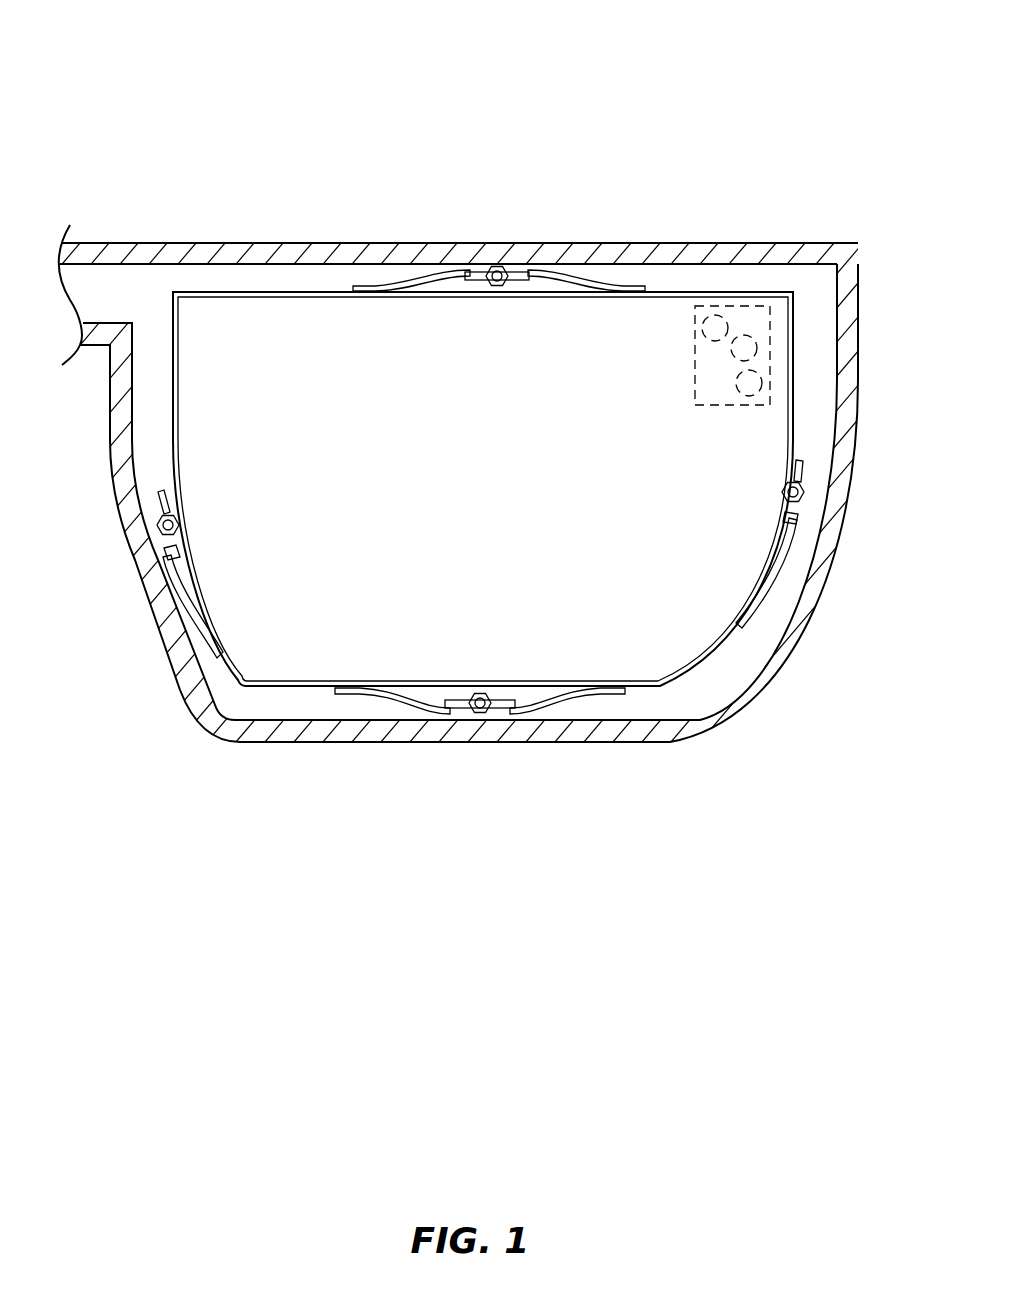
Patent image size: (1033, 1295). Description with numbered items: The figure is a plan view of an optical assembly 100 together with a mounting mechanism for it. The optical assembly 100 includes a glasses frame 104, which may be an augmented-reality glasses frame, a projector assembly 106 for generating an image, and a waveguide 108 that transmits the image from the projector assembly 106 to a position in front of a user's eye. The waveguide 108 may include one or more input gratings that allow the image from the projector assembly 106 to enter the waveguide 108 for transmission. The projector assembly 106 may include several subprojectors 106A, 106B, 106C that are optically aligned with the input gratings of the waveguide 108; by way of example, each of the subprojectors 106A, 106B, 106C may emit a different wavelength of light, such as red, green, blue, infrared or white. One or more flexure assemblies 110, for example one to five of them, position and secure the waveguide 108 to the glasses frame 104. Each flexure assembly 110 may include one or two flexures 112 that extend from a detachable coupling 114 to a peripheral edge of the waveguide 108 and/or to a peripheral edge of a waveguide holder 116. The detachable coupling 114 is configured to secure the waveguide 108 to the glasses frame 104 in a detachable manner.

The optical assembly 100 is at (124, 72).
The glasses frame 104 is at (398, 255).
The projector assembly 106 is at (818, 292).
The subprojector 106A is at (728, 328).
The subprojector 106B is at (757, 350).
The subprojector 106C is at (763, 383).
The waveguide 108 is at (267, 300).
The flexure assembly 110 is at (475, 510).
The flexure 112 is at (377, 692).
The detachable coupling 114 is at (473, 745).
The waveguide holder 116 is at (173, 458).